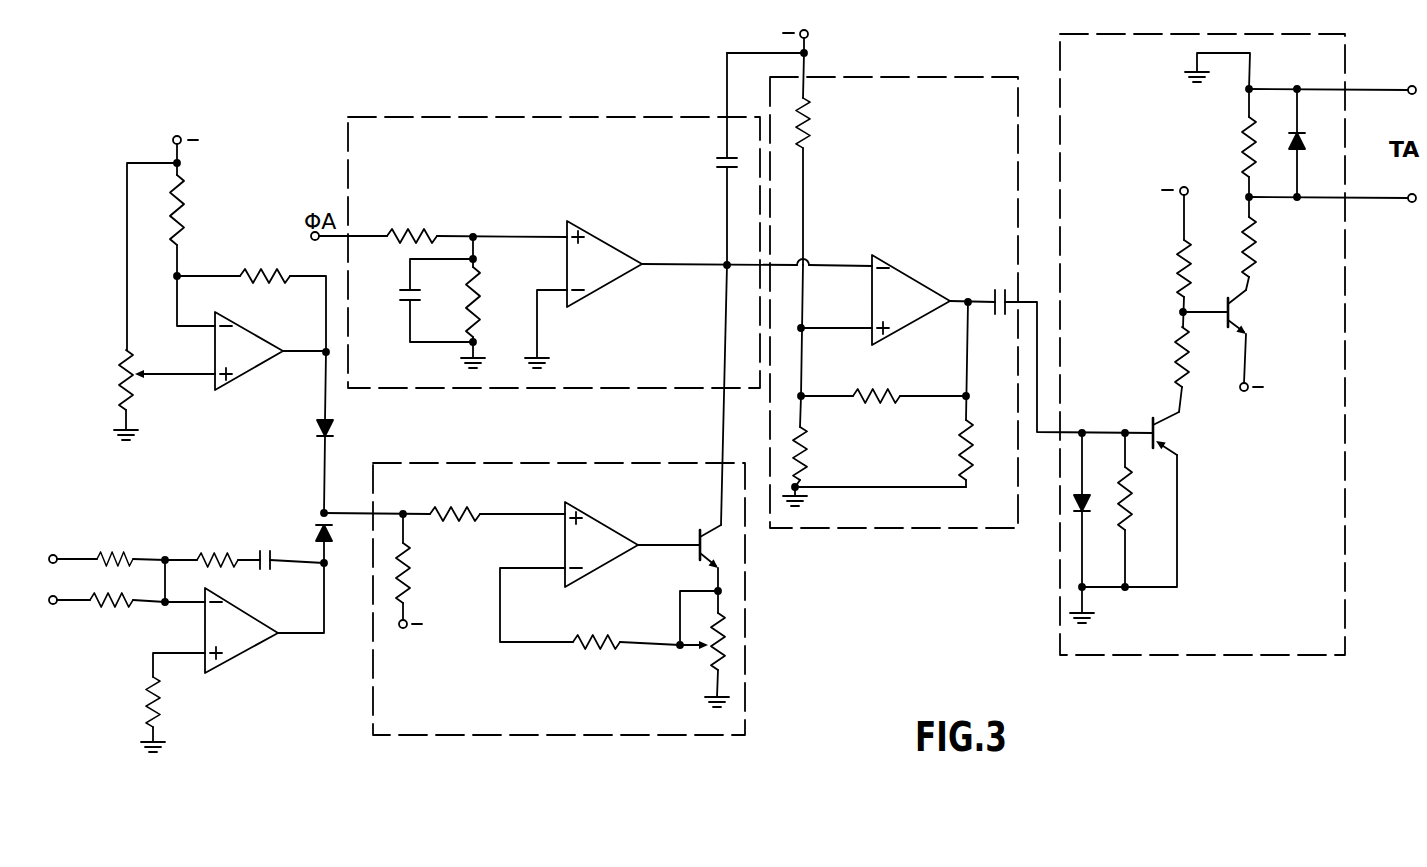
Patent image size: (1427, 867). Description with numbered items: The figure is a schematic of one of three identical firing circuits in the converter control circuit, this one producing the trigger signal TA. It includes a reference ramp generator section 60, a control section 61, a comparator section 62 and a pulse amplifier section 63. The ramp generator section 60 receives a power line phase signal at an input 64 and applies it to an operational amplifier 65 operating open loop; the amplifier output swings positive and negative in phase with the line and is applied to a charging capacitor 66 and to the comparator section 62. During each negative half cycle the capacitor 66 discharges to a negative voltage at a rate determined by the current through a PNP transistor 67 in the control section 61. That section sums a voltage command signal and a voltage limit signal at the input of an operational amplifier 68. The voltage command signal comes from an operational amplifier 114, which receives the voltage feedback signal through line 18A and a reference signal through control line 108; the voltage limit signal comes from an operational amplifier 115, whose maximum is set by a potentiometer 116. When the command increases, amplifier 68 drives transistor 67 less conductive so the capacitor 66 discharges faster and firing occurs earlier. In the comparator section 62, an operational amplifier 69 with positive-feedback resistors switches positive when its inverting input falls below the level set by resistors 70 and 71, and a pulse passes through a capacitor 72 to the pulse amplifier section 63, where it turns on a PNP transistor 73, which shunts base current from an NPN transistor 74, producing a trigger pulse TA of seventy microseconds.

The line 18A is at (55, 555).
The control line 108 is at (55, 605).
The operational amplifier 114 is at (242, 655).
The operational amplifier 115 is at (281, 406).
The potentiometer 116 is at (117, 387).
The reference ramp generator section 60 is at (489, 111).
The control section 61 is at (752, 675).
The comparator section 62 is at (989, 541).
The pulse amplifier section 63 is at (1202, 667).
The input 64 is at (311, 236).
The operational amplifier 65 is at (664, 233).
The charging capacitor 66 is at (727, 172).
The PNP transistor 67 is at (708, 524).
The operational amplifier 68 is at (648, 501).
The operational amplifier 69 is at (966, 254).
The resistor 70 is at (812, 124).
The resistor 71 is at (805, 457).
The capacitor 72 is at (990, 307).
The PNP transistor 73 is at (1172, 431).
The NPN transistor 74 is at (1237, 315).